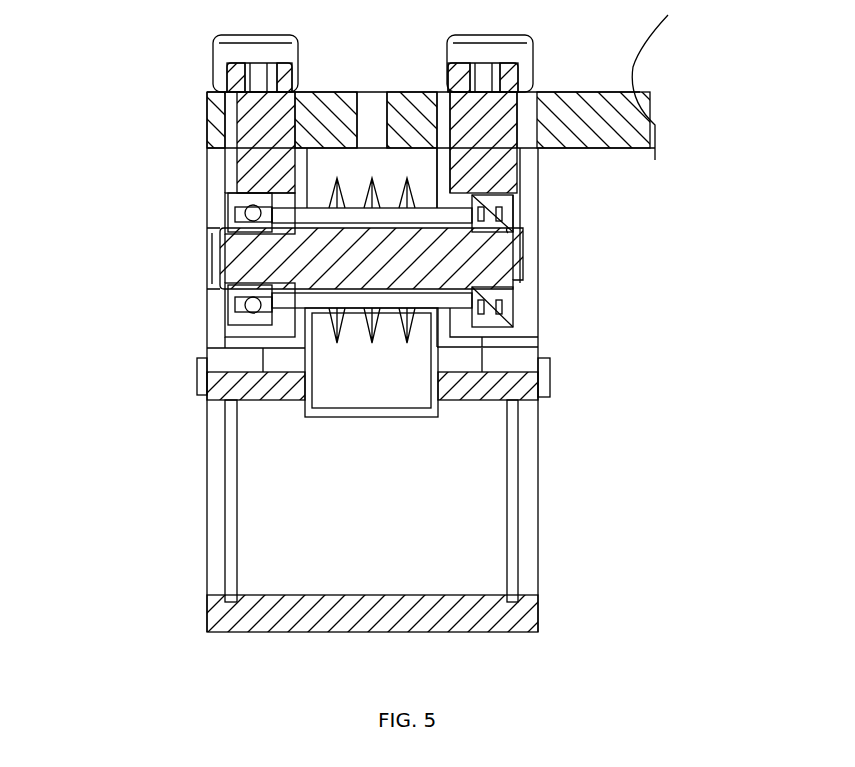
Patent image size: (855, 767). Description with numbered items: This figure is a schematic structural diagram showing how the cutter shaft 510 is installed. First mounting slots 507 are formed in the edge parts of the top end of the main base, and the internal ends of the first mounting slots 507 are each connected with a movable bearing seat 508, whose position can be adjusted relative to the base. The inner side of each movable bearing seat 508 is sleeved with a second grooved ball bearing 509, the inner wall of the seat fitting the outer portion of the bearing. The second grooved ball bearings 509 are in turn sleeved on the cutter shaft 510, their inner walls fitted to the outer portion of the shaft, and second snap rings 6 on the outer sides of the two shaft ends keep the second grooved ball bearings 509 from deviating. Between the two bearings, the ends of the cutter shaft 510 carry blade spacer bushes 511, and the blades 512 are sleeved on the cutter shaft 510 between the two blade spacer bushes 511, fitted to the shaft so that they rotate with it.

The first mounting slot 507 is at (535, 208).
The movable bearing seat 508 is at (514, 327).
The second grooved ball bearing 509 is at (492, 311).
The cutter shaft 510 is at (335, 268).
The blade spacer bush 511 is at (238, 262).
The blade 512 is at (348, 213).
The second snap ring 6 is at (519, 232).